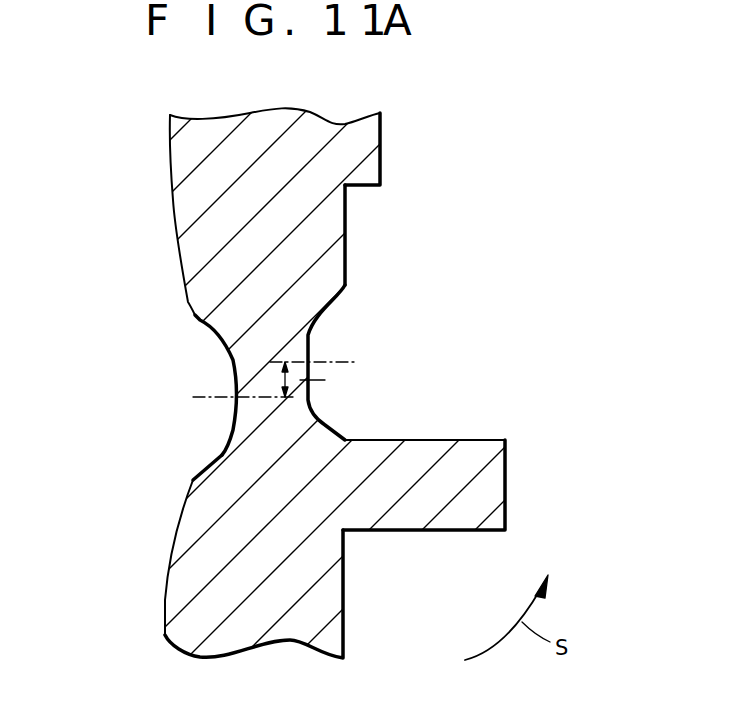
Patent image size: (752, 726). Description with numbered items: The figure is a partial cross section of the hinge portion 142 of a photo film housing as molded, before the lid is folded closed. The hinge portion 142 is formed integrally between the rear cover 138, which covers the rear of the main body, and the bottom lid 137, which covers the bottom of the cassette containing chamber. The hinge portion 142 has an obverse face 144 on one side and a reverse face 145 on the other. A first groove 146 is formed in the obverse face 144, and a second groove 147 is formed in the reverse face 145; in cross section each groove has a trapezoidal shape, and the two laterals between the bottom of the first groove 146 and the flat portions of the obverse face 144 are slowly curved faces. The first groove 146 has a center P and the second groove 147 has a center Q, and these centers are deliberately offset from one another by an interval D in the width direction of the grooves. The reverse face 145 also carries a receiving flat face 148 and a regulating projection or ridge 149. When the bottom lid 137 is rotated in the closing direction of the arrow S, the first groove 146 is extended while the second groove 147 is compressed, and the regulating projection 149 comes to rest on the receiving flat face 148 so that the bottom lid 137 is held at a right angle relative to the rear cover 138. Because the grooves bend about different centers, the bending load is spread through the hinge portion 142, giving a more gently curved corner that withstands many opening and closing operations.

The bottom lid 137 is at (165, 600).
The rear cover 138 is at (173, 222).
The hinge portion 142 is at (168, 368).
The obverse face 144 is at (190, 302).
The reverse face 145 is at (380, 148).
The first groove 146 is at (215, 456).
The second groove 147 is at (308, 343).
The receiving flat face 148 is at (345, 240).
The regulating projection 149 is at (462, 440).